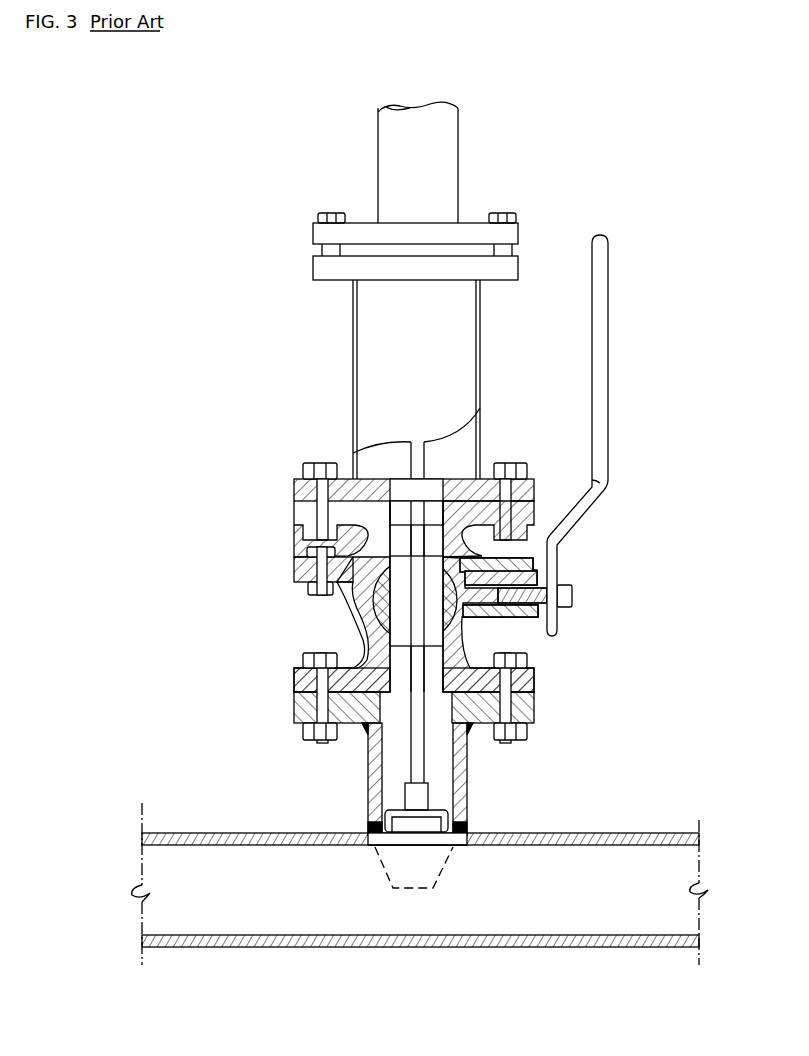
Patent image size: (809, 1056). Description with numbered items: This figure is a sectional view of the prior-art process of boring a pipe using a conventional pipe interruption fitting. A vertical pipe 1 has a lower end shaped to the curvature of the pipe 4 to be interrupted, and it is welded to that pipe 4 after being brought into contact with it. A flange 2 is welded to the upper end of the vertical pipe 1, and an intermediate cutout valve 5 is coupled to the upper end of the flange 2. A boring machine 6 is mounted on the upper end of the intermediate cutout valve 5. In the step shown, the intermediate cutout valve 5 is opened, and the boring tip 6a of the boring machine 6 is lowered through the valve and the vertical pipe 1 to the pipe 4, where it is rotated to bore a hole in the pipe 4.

The vertical pipe 1 is at (370, 773).
The flange 2 is at (534, 708).
The pipe 4 is at (213, 836).
The intermediate cutout valve 5 is at (353, 610).
The boring machine 6 is at (377, 372).
The boring tip 6a is at (387, 813).